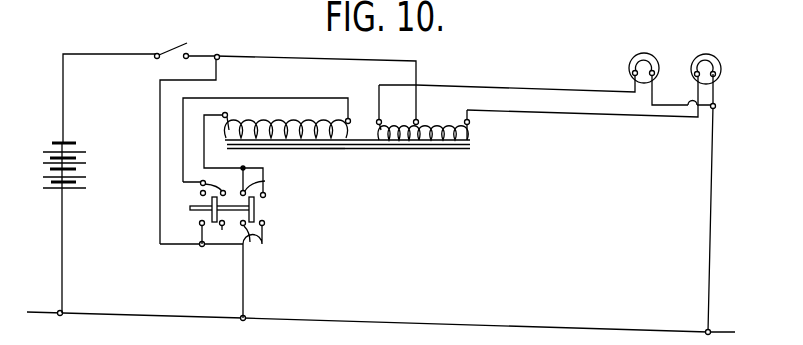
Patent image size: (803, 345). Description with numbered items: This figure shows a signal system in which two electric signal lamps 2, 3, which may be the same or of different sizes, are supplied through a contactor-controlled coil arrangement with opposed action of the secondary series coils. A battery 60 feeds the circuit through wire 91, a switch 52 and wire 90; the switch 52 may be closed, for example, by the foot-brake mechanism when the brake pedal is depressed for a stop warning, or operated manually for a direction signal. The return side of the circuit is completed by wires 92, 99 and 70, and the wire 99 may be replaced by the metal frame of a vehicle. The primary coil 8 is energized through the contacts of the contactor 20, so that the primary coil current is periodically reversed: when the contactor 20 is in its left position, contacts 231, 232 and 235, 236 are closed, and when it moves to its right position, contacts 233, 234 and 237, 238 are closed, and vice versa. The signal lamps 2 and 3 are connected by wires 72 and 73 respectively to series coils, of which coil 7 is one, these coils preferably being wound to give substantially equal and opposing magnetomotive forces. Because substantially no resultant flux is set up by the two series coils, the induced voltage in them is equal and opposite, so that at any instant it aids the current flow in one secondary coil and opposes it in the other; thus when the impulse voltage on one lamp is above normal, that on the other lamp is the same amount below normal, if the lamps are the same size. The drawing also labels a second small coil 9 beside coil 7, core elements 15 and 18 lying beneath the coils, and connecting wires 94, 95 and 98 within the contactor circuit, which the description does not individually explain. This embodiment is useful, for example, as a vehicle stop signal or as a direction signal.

The signal lamp 2 is at (643, 53).
The signal lamp 3 is at (712, 54).
The series coil 7 is at (393, 136).
The primary coil 8 is at (283, 124).
The coil 9 is at (443, 141).
The core 15 is at (331, 148).
The core laminations 18 is at (353, 149).
The contactor 20 is at (176, 211).
The switch 52 is at (168, 46).
The battery 60 is at (57, 143).
The wire 70 is at (712, 218).
The wire 72 is at (565, 88).
The wire 73 is at (567, 115).
The wire 90 is at (243, 57).
The wire 91 is at (107, 54).
The wire 92 is at (63, 265).
The wire 94 is at (230, 98).
The wire 95 is at (204, 147).
The wire 98 is at (243, 290).
The wire 99 is at (418, 305).
The contact 231 is at (200, 194).
The contact 232 is at (200, 226).
The contact 233 is at (202, 181).
The contact 234 is at (222, 230).
The contact 235 is at (265, 181).
The contact 236 is at (250, 242).
The contact 237 is at (266, 195).
The contact 238 is at (264, 224).